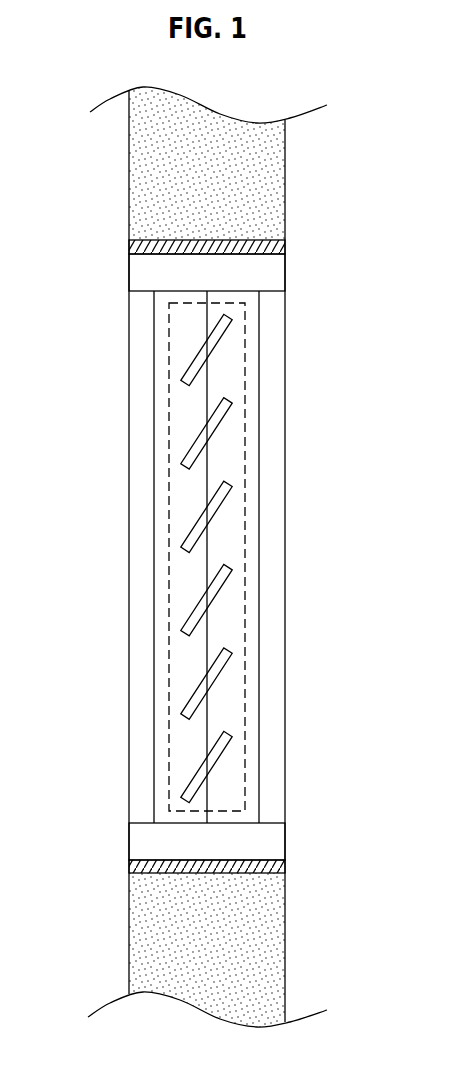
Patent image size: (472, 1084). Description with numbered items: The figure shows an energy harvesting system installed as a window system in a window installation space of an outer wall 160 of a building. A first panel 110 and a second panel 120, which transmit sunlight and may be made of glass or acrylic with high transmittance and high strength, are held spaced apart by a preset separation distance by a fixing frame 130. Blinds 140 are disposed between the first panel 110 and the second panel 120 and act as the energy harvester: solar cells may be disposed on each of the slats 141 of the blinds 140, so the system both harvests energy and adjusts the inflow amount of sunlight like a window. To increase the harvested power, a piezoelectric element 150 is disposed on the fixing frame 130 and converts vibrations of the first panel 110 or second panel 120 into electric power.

The first panel 110 is at (128, 364).
The second panel 120 is at (285, 362).
The fixing frame 130 is at (285, 272).
The blinds 140 is at (168, 737).
The slats 141 is at (208, 673).
The piezoelectric element 150 is at (128, 250).
The outer wall 160 is at (285, 189).